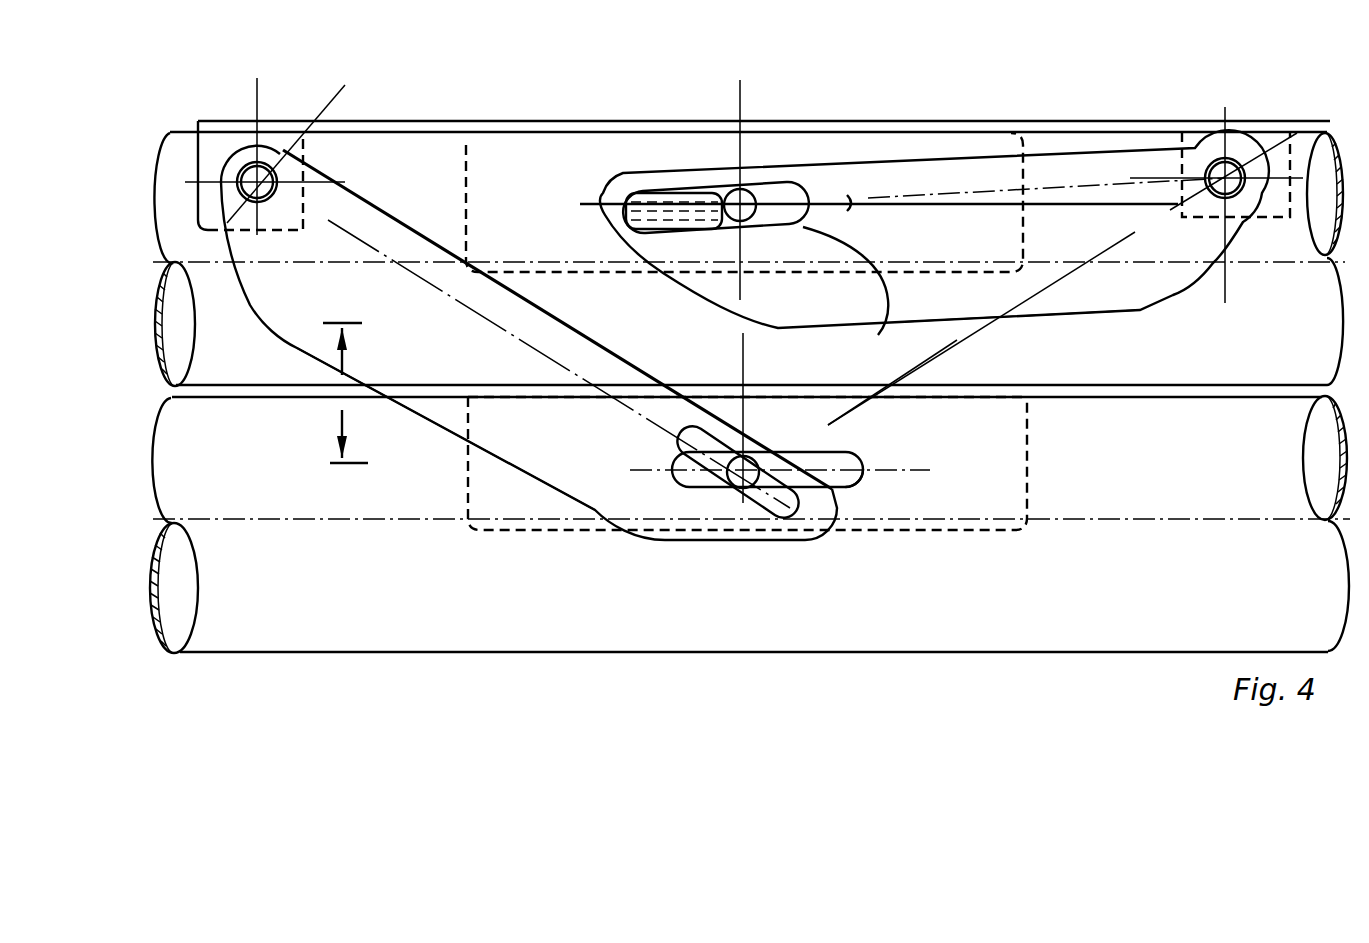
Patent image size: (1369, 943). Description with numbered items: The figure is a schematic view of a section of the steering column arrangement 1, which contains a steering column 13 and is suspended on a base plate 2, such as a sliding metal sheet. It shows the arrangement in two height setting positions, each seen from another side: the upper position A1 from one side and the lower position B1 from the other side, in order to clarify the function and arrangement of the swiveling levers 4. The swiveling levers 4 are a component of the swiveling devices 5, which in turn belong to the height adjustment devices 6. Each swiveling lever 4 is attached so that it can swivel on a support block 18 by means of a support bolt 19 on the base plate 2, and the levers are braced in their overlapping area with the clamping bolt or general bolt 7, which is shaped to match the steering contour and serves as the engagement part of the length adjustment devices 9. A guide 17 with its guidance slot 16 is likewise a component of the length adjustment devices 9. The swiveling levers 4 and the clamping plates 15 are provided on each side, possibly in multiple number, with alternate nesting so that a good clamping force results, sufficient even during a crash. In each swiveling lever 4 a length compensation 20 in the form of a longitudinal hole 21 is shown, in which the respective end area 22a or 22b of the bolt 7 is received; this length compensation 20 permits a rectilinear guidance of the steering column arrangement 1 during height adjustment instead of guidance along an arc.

The steering column arrangement 1 is at (198, 366).
The base plate 2 is at (867, 121).
The swiveling lever 4 is at (300, 308).
The swiveling devices 5 is at (396, 212).
The height adjustment devices 6 is at (410, 348).
The bolt 7 is at (755, 190).
The length adjustment devices 9 is at (600, 184).
The steering column 13 is at (187, 320).
The clamping plates 15 is at (540, 130).
The guidance slot 16 is at (851, 210).
The guide 17 is at (821, 444).
The support block 18 is at (217, 147).
The support bolt 19 is at (1183, 163).
The length compensation 20 is at (693, 205).
The longitudinal hole 21 is at (690, 426).
The end area of the bolt 22a is at (740, 228).
The end area of the bolt 22b is at (790, 505).
The upper position A1 is at (142, 176).
The lower position B1 is at (423, 655).